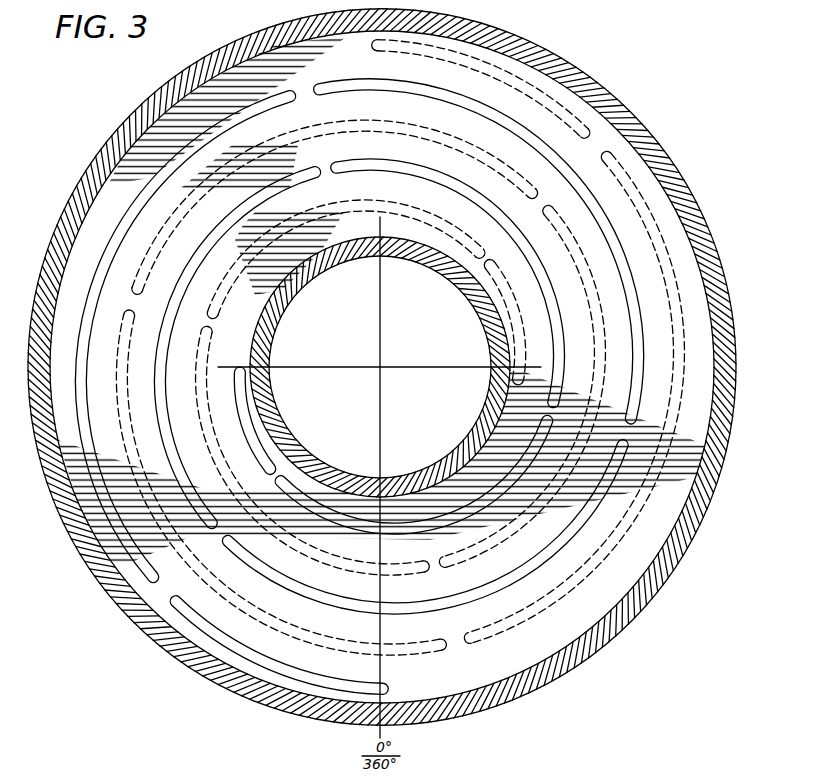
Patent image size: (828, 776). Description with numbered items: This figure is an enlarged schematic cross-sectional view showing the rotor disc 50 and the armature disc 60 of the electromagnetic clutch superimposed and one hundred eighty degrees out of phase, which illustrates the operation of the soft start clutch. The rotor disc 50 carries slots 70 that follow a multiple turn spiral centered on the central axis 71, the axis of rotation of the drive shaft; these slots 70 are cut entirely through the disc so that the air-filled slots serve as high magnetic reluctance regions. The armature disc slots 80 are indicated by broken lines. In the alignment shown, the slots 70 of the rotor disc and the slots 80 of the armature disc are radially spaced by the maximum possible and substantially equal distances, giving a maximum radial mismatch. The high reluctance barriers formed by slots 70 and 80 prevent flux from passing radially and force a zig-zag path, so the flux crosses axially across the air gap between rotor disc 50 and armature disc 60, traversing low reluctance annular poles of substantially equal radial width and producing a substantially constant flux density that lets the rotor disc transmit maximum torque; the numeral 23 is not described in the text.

The rotary disc 23 is at (540, 28).
The rotor disc 50 is at (672, 487).
The armature disc 60 is at (617, 572).
The slots 70 is at (163, 173).
The central axis 71 is at (382, 365).
The armature disc slots 80 is at (546, 92).